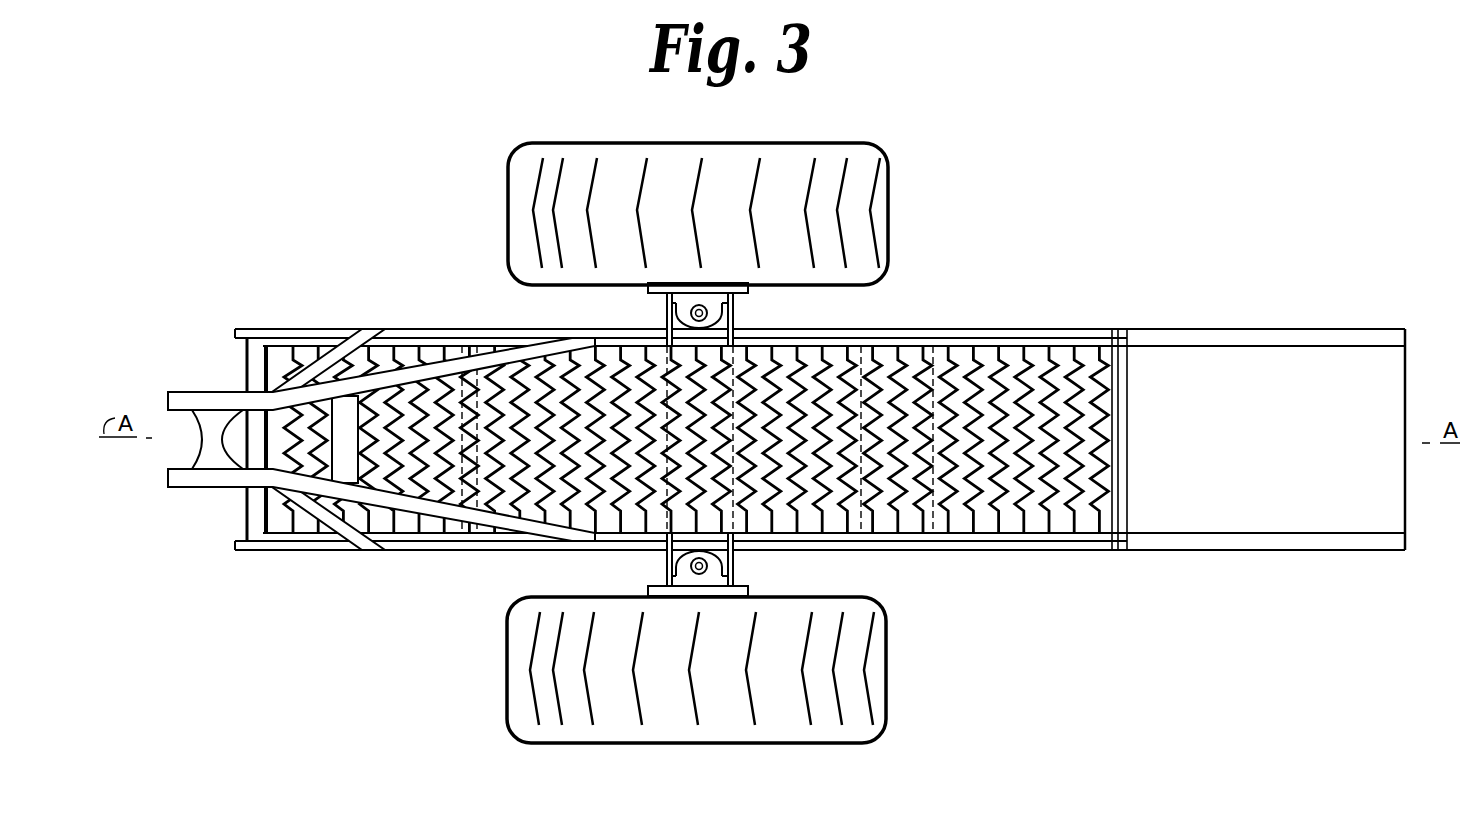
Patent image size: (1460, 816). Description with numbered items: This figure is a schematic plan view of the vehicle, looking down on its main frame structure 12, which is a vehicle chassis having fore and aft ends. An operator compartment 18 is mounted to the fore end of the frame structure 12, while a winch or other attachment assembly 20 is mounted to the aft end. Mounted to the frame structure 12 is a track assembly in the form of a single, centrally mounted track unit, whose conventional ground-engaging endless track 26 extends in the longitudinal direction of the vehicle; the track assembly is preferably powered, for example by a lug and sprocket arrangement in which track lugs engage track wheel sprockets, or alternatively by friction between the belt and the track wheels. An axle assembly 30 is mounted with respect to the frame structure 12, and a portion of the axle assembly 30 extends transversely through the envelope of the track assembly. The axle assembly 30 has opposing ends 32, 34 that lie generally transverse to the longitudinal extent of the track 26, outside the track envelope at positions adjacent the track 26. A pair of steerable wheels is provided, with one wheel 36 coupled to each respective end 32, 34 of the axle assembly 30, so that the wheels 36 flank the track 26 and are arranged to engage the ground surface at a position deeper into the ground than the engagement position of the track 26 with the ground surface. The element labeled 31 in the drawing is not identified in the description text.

The main frame structure 12 is at (1100, 328).
The operator compartment 18 is at (1322, 329).
The attachment assembly 20 is at (195, 388).
The endless track 26 is at (1037, 527).
The axle assembly 30 is at (747, 320).
The bearing housing 31 is at (667, 568).
The end of axle assembly 32 is at (667, 313).
The end of axle assembly 34 is at (735, 568).
The steerable wheel 36 is at (890, 207).